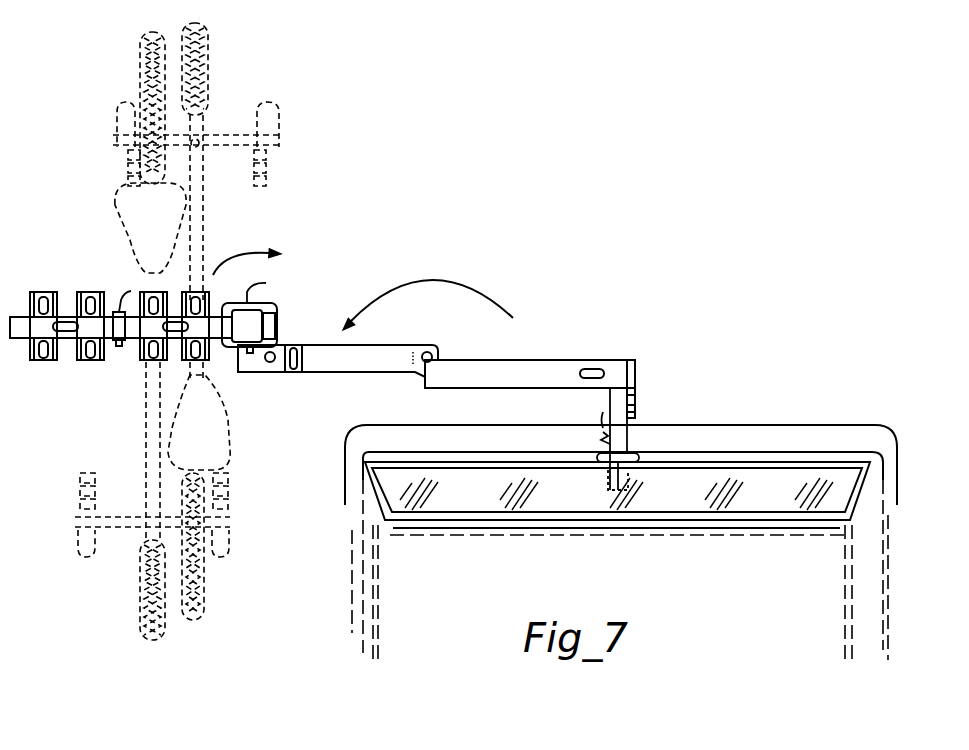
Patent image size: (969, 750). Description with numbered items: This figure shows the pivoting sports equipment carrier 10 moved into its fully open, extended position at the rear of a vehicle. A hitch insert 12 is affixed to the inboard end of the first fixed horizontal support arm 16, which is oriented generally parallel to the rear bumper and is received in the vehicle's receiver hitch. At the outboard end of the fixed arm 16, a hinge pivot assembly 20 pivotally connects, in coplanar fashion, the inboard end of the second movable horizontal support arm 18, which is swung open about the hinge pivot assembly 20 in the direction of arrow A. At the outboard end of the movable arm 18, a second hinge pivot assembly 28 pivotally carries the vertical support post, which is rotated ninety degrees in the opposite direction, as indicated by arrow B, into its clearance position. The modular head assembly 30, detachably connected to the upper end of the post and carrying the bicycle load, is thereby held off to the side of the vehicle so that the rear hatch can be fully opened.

The pivoting sports equipment carrier 10 is at (405, 193).
The hitch insert 12 is at (607, 403).
The first fixed horizontal support member or arm 16 is at (534, 367).
The second movable horizontal support member or arm 18 is at (318, 350).
The hinge pivot assembly 20 is at (436, 334).
The second hinge pivot assembly 28 is at (261, 380).
The modular head assembly 30 is at (95, 277).